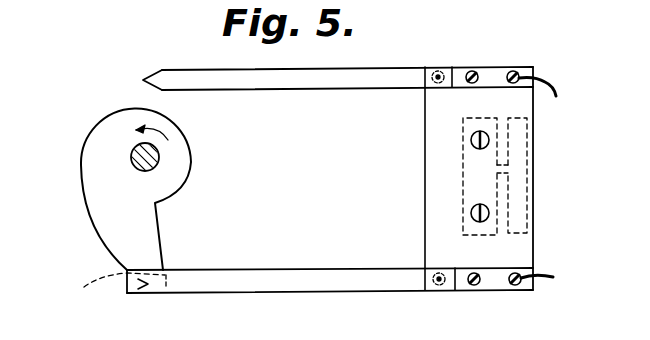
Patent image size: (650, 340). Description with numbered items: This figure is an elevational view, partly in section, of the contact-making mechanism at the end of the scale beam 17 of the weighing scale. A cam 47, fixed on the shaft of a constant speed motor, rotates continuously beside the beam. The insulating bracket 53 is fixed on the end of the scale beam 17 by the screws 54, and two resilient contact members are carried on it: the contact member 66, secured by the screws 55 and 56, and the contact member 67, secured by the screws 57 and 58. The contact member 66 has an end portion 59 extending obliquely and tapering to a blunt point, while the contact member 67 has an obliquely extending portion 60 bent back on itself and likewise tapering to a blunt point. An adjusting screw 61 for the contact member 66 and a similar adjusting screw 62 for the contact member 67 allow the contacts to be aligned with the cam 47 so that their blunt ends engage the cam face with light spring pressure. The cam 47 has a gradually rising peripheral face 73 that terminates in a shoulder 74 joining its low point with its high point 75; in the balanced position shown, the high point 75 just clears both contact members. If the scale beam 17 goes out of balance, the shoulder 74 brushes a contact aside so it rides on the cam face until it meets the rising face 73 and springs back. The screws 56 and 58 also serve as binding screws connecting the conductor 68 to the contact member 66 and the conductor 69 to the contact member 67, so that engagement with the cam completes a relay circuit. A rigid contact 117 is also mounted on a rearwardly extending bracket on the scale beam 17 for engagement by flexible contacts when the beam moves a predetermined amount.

The scale beam 17 is at (463, 184).
The cam 47 is at (110, 129).
The insulating bracket 53 is at (441, 135).
The screws 54 is at (471, 142).
The screw 55 is at (473, 70).
The screw 56 is at (515, 70).
The screw 57 is at (472, 272).
The screw 58 is at (519, 287).
The end portion 59 is at (145, 78).
The obliquely extending portion 60 is at (116, 285).
The adjusting screw 61 is at (437, 70).
The adjusting screw 62 is at (434, 286).
The contact member 66 is at (258, 84).
The contact member 67 is at (328, 283).
The conductor 68 is at (548, 82).
The conductor 69 is at (554, 278).
The rising peripheral face 73 is at (80, 213).
The shoulder 74 is at (160, 218).
The high point 75 is at (162, 293).
The rigid contact 117 is at (536, 168).